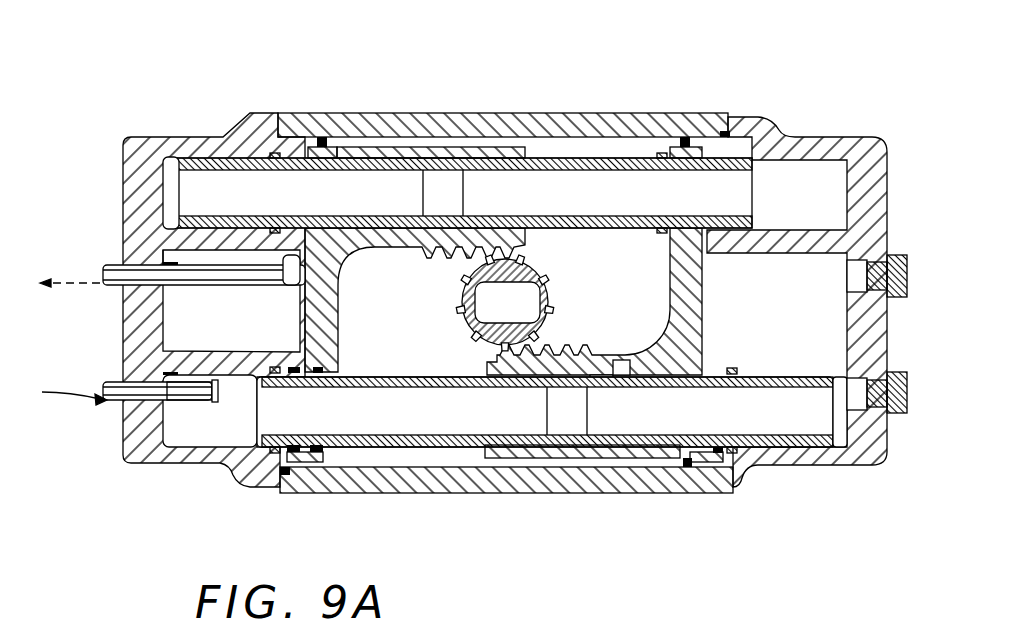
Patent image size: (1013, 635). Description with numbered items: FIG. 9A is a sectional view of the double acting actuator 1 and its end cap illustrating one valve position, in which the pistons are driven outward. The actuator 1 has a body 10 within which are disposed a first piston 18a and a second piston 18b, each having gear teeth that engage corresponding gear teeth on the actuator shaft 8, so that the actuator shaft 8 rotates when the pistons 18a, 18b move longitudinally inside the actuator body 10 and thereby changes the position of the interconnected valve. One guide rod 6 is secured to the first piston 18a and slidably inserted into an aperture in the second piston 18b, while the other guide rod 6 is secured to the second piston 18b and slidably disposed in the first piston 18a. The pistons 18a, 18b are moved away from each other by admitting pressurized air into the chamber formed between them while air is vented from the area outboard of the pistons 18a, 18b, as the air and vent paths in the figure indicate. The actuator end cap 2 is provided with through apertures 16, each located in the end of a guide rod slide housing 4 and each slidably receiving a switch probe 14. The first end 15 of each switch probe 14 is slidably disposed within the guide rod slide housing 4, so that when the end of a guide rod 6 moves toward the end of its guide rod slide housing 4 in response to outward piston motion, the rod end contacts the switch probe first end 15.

The actuator 1 is at (590, 95).
The actuator end cap 2 is at (178, 463).
The guide rod slide housing 4 is at (168, 188).
The guide rod 6 is at (355, 445).
The actuator shaft 8 is at (605, 378).
The actuator body 10 is at (515, 493).
The switch probe 14 is at (233, 281).
The first end of switch probe 15 is at (293, 281).
The through aperture 16 is at (123, 404).
The first piston 18a is at (628, 460).
The second piston 18b is at (417, 146).